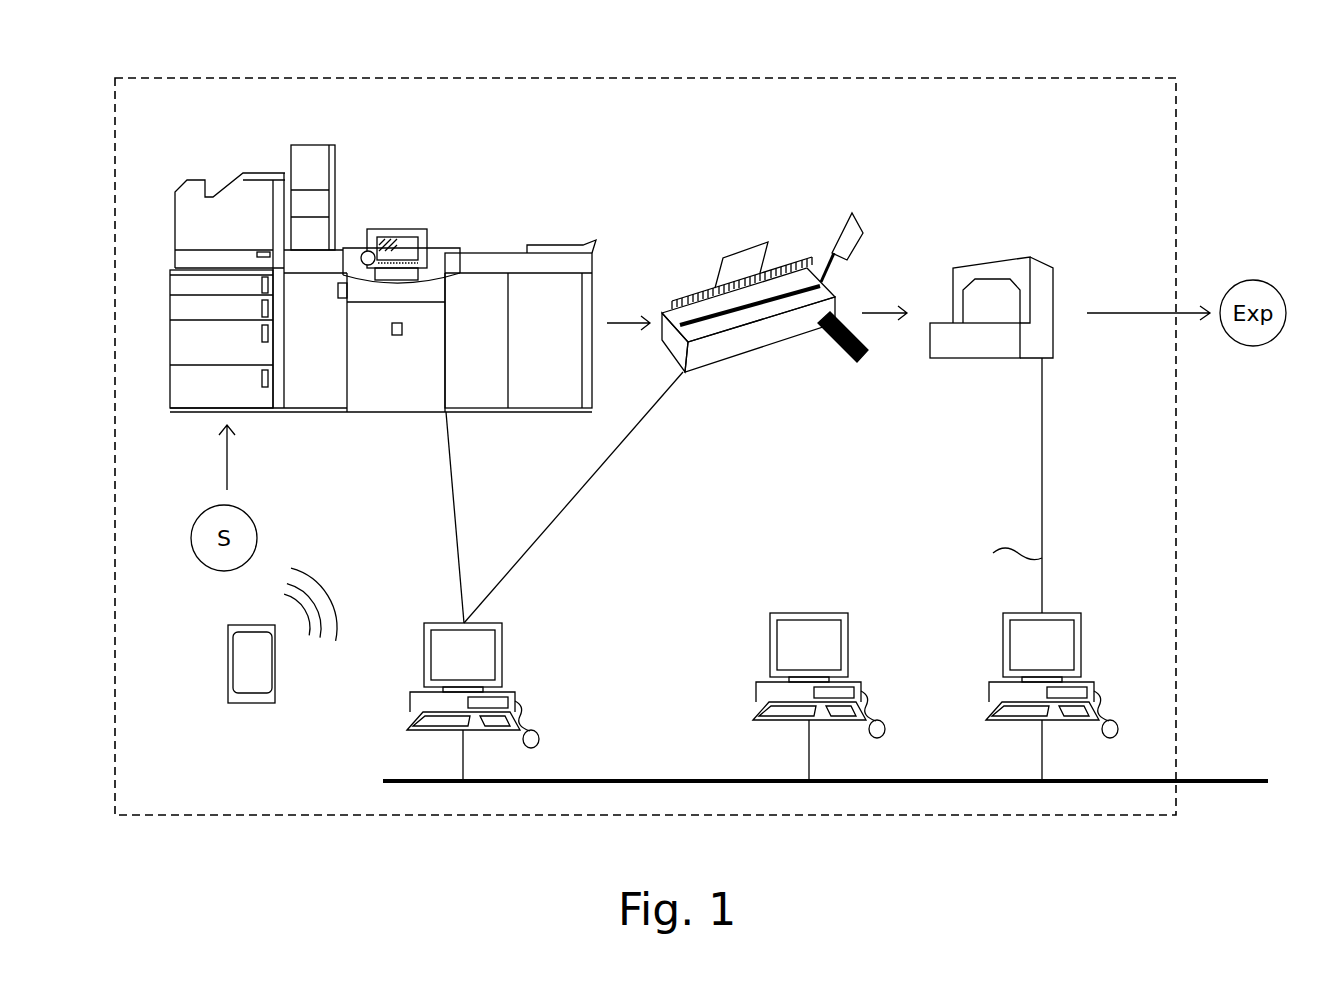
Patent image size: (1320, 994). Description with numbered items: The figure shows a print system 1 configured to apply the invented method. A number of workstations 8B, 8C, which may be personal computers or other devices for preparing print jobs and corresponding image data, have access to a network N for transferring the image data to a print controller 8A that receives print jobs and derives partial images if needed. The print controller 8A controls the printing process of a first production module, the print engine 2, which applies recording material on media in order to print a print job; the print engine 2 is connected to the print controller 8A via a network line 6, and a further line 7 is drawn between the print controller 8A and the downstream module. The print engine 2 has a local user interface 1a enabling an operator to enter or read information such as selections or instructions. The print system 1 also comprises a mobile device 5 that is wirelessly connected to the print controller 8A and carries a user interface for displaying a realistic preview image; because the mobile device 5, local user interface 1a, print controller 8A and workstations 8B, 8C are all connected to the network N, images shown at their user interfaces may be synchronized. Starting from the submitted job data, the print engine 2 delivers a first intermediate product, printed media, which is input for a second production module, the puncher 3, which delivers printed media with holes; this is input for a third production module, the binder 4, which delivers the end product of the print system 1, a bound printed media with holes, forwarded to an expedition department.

The print system 1 is at (990, 78).
The local user interface 1a is at (422, 228).
The print engine 2 is at (252, 173).
The puncher 3 is at (799, 268).
The binder 4 is at (982, 262).
The mobile device 5 is at (228, 702).
The network line 6 is at (455, 553).
The communication line 7 is at (548, 528).
The print controller 8A is at (513, 697).
The workstation 8B is at (859, 687).
The workstation 8C is at (1092, 687).
The network N is at (1250, 780).